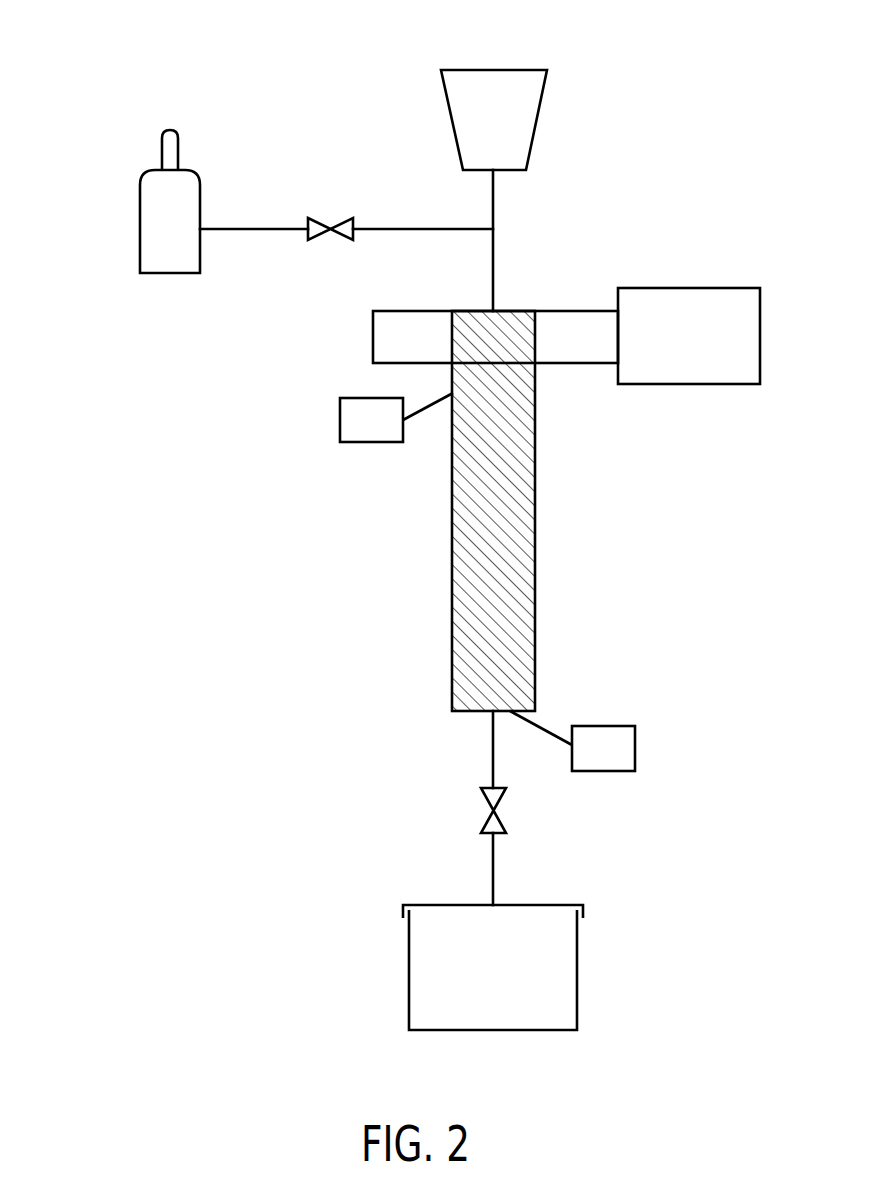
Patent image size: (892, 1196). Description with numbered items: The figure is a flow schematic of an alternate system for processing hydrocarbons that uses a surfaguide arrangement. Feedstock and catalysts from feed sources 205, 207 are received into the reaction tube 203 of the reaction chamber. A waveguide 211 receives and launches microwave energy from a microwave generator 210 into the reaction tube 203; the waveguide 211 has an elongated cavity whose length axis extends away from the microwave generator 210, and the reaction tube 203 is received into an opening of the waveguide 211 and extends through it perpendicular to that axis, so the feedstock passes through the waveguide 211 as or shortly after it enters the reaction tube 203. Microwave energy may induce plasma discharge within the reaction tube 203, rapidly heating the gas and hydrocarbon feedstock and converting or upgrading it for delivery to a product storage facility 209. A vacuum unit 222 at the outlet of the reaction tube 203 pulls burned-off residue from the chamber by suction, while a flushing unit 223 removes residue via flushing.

The reaction tube 203 is at (471, 712).
The feed source 205 is at (492, 68).
The feed source 207 is at (140, 224).
The product storage facility 209 is at (409, 975).
The microwave generator 210 is at (688, 386).
The waveguide 211 is at (592, 309).
The vacuum unit 222 is at (635, 745).
The flushing unit 223 is at (340, 420).